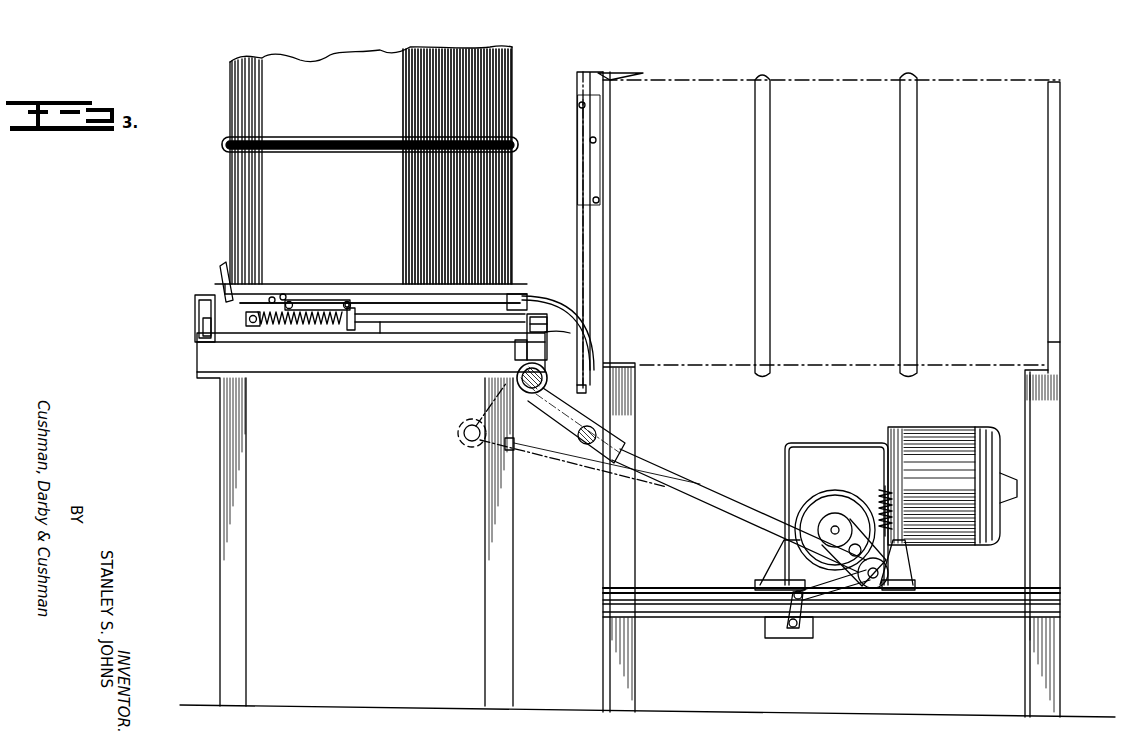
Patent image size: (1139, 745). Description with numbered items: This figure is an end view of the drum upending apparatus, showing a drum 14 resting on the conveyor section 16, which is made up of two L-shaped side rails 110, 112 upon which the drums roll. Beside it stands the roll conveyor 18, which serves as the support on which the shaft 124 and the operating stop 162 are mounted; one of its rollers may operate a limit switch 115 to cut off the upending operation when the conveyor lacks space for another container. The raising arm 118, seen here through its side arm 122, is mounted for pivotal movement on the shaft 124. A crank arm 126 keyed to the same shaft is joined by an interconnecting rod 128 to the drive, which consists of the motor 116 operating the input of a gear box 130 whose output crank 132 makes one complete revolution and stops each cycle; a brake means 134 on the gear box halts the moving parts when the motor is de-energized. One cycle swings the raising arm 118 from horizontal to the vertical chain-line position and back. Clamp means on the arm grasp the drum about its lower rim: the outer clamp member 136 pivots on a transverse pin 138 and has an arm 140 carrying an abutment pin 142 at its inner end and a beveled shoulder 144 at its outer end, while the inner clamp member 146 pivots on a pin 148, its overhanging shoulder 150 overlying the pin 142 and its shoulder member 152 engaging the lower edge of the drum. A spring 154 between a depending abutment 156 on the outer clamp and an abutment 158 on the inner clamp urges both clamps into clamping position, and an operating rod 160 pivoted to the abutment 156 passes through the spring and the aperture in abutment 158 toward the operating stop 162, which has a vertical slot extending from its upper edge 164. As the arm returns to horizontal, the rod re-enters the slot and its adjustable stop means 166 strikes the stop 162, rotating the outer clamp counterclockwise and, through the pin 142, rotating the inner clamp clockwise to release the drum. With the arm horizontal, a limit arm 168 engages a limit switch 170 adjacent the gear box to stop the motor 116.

The drum 14 is at (232, 183).
The conveyor section 16 is at (1061, 340).
The roll conveyor 18 is at (210, 393).
The side rail 110 is at (630, 360).
The side rail 112 is at (1062, 358).
The limit switch 115 is at (200, 325).
The motor 116 is at (918, 428).
The raising arm 118 is at (372, 332).
The side arm 122 is at (432, 333).
The shaft 124 is at (575, 393).
The crank arm 126 is at (560, 437).
The interconnecting rod 128 is at (684, 480).
The gear box 130 is at (790, 445).
The output crank 132 is at (893, 545).
The brake means 134 is at (812, 478).
The outer clamp member 136 is at (208, 283).
The transverse pin 138 is at (195, 304).
The arm 140 is at (270, 300).
The abutment pin 142 is at (284, 297).
The beveled shoulder 144 is at (220, 266).
The inner clamp member 146 is at (385, 322).
The pin 148 is at (345, 302).
The overhanging shoulder 150 is at (290, 305).
The shoulder member 152 is at (520, 294).
The spring 154 is at (302, 322).
The depending abutment 156 is at (257, 330).
The abutment 158 is at (348, 312).
The operating rod 160 is at (420, 325).
The operating stop 162 is at (562, 340).
The upper edge 164 is at (540, 315).
The adjustable stop means 166 is at (548, 332).
The limit arm 168 is at (812, 574).
The limit switch 170 is at (813, 636).